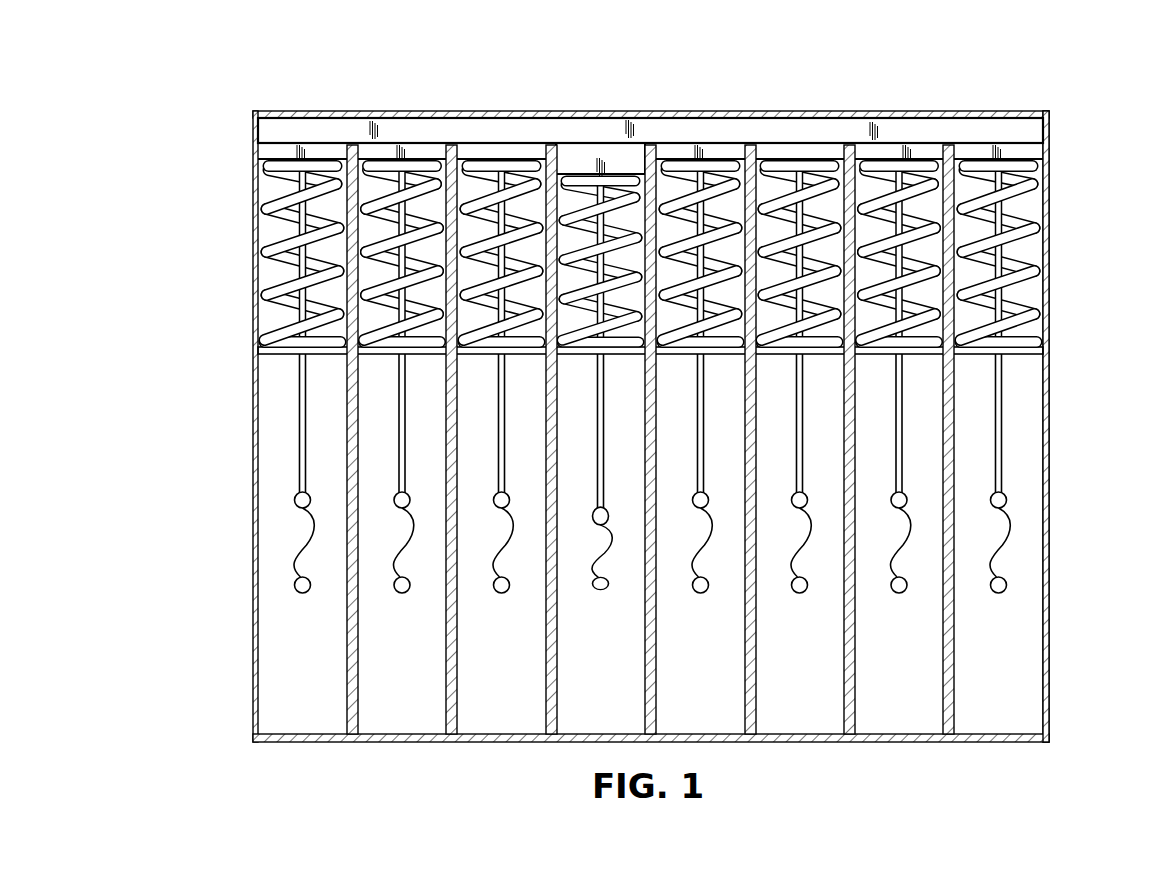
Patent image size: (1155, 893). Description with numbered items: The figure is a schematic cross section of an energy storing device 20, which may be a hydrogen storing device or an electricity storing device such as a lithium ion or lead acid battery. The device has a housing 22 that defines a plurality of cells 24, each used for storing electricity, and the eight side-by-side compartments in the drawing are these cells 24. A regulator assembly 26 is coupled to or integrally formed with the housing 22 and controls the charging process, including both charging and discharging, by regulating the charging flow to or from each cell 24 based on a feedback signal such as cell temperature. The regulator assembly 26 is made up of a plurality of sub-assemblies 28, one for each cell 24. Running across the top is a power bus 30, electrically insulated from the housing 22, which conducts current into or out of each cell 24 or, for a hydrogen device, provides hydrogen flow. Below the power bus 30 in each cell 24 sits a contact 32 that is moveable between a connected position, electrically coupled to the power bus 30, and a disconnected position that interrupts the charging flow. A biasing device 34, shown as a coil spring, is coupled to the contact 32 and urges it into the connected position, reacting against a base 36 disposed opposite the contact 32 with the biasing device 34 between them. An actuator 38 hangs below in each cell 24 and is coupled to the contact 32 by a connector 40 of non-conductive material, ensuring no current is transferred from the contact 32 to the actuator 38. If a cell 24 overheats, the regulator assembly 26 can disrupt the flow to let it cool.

The energy storing device 20 is at (1024, 88).
The housing 22 is at (1048, 417).
The cell 24 is at (591, 702).
The regulator assembly 26 is at (1052, 193).
The sub-assembly 28 is at (690, 212).
The power bus 30 is at (823, 127).
The contact 32 is at (920, 150).
The biasing device 34 is at (573, 217).
The base 36 is at (437, 355).
The actuator 38 is at (507, 556).
The connector 40 is at (300, 445).